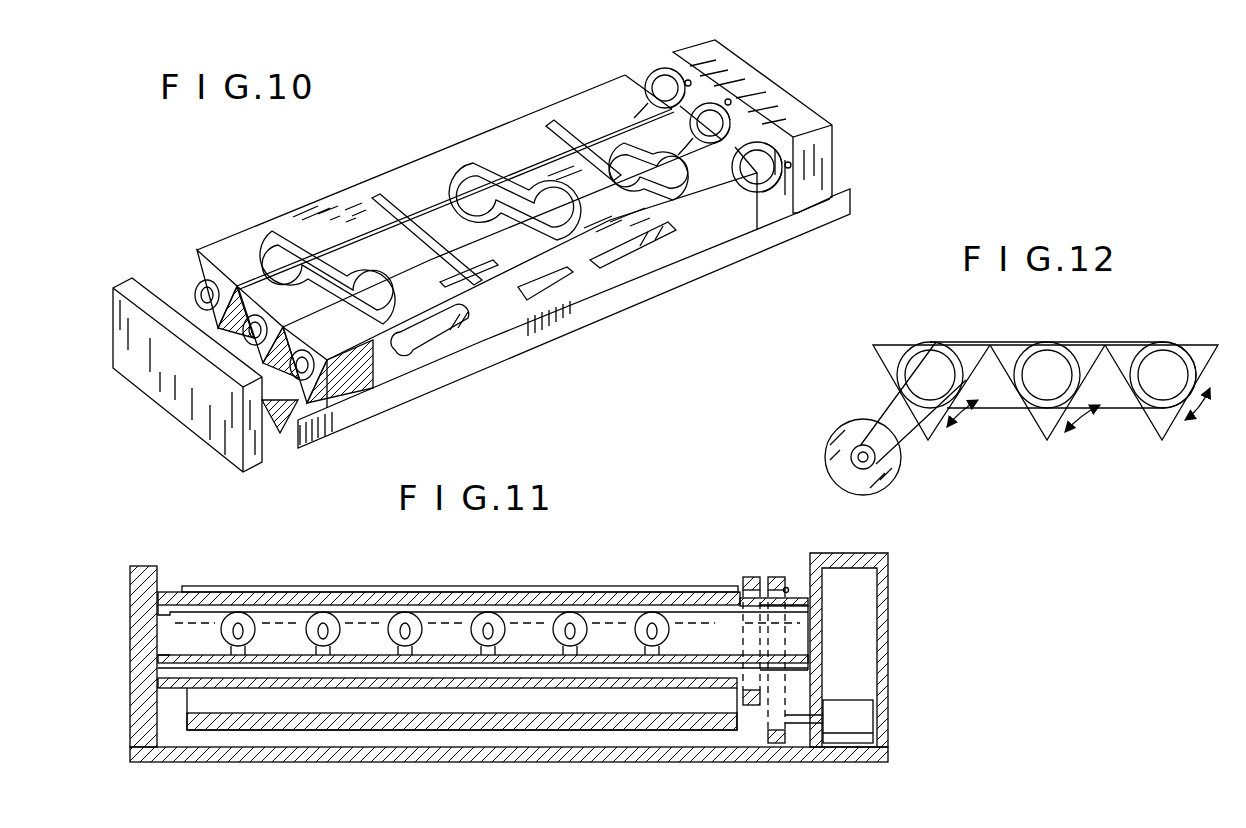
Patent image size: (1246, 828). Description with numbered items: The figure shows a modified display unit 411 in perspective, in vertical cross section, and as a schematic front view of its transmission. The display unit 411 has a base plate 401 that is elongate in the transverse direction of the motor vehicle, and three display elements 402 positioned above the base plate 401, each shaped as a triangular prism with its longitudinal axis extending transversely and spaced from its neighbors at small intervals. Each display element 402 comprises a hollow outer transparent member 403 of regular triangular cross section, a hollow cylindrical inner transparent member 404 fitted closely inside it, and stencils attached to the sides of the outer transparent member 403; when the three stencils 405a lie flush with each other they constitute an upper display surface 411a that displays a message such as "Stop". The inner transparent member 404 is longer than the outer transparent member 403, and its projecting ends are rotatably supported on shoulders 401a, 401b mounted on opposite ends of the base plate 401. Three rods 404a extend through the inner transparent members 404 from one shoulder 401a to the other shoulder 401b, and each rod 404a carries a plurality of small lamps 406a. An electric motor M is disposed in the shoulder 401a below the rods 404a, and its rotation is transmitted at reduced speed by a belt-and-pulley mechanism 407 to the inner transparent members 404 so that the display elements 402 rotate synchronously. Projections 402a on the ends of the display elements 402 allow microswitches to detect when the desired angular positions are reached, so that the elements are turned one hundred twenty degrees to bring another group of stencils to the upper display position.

In FIG. 10, the base plate 401 is at (606, 306).
In FIG. 11, the base plate 401 is at (620, 753).
In FIG. 10, the shoulder 401a is at (793, 110).
In FIG. 11, the shoulder 401a is at (888, 665).
In FIG. 10, the shoulder 401b is at (204, 397).
In FIG. 11, the shoulder 401b is at (132, 596).
In FIG. 10, the display element 402 is at (312, 328).
In FIG. 11, the display element 402 is at (272, 583).
In FIG. 12, the display element 402 is at (1140, 332).
In FIG. 11, the projection 402a is at (787, 588).
In FIG. 11, the outer transparent member 403 is at (433, 591).
In FIG. 11, the inner transparent member 404 is at (373, 686).
In FIG. 11, the rod 404a is at (693, 657).
In FIG. 10, the stencil 405a is at (527, 122).
In FIG. 11, the stencil 405a is at (557, 586).
In FIG. 11, the small lamp 406a is at (658, 616).
In FIG. 12, the belt-and-pulley mechanism 407 is at (1042, 484).
In FIG. 10, the display unit 411 is at (428, 110).
In FIG. 10, the upper display surface 411a is at (352, 200).
In FIG. 11, the electric motor M is at (863, 718).
In FIG. 12, the electric motor M is at (884, 467).